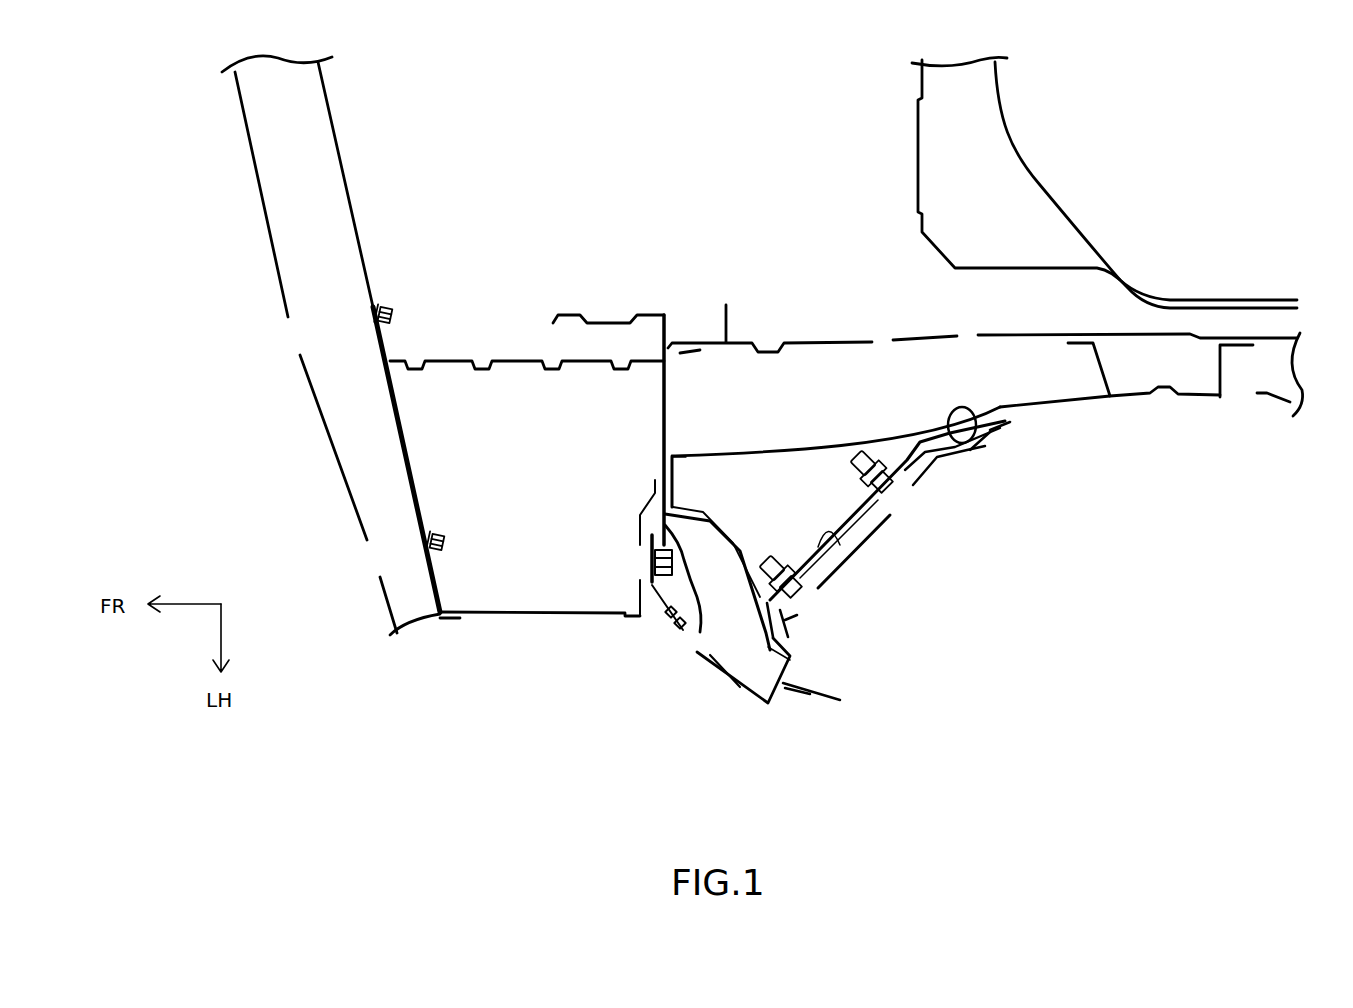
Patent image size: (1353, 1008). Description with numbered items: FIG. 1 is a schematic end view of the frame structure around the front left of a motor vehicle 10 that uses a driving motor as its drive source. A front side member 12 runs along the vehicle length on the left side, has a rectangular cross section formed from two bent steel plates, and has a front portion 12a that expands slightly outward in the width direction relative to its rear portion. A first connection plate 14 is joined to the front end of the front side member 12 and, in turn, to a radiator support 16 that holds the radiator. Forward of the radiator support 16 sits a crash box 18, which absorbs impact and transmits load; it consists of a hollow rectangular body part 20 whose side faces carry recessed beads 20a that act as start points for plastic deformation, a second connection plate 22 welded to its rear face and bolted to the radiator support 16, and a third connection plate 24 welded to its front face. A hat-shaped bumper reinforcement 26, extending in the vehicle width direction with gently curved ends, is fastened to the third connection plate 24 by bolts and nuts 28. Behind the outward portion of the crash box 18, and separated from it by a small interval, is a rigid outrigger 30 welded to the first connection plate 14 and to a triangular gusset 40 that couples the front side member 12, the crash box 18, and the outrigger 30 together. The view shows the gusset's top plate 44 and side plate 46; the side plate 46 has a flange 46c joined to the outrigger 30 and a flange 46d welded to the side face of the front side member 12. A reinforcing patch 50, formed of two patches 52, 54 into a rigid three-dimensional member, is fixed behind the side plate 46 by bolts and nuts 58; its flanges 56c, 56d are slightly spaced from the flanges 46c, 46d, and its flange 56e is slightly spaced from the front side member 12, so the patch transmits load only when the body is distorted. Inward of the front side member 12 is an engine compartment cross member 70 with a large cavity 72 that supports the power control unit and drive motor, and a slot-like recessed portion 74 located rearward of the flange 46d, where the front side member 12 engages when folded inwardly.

The motor vehicle 10 is at (706, 103).
The front side member 12 is at (815, 336).
The front portion 12a is at (745, 385).
The first connection plate 14 is at (668, 405).
The radiator support 16 is at (666, 314).
The crash box 18 is at (527, 346).
The body part 20 is at (488, 362).
The recessed beads 20a is at (403, 366).
The second connection plate 22 is at (660, 352).
The third connection plate 24 is at (395, 352).
The bumper reinforcement 26 is at (255, 240).
The bolts and nuts 28 is at (388, 305).
The outrigger 30 is at (714, 688).
The triangular gusset 40 is at (810, 501).
The top plate 44 is at (835, 538).
The side plate 46 is at (856, 540).
The flange 46c is at (770, 640).
The flange 46d is at (990, 432).
The reinforcing patch 50 is at (898, 526).
The patch 52 is at (876, 535).
The patch 54 is at (882, 522).
The flange 56c is at (786, 682).
The flange 56d is at (977, 441).
The flange 56e is at (1008, 416).
The bolts and nuts 58 is at (895, 495).
The engine compartment cross member 70 is at (900, 156).
The cavity 72 is at (1113, 177).
The recessed portion 74 is at (1103, 276).